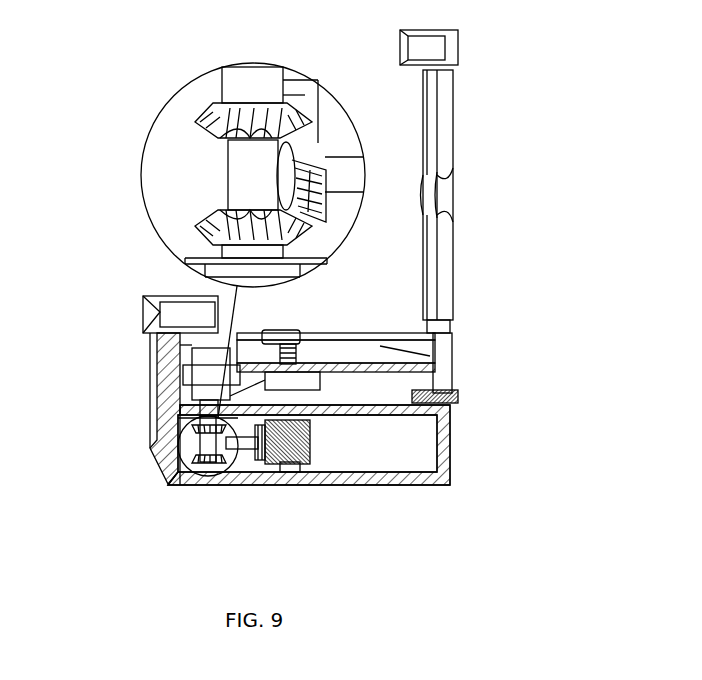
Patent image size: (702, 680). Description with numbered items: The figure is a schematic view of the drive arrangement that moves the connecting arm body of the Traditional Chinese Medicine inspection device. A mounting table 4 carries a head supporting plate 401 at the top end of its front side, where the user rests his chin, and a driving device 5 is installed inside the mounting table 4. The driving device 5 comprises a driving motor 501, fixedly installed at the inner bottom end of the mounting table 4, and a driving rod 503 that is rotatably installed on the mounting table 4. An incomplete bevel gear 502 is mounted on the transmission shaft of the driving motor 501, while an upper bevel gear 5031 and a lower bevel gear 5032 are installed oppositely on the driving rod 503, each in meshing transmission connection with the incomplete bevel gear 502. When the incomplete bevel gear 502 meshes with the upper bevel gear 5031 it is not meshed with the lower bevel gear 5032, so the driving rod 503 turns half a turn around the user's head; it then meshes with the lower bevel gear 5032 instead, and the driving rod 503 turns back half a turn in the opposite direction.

The mounting table 4 is at (341, 486).
The head supporting plate 401 is at (146, 331).
The driving device 5 is at (196, 446).
The driving motor 501 is at (265, 478).
The incomplete bevel gear 502 is at (322, 148).
The driving rod 503 is at (227, 78).
The upper bevel gear 5031 is at (196, 126).
The lower bevel gear 5032 is at (197, 228).